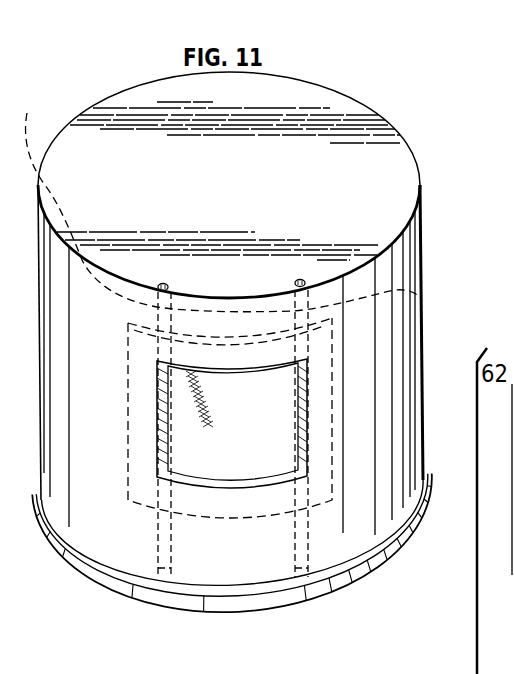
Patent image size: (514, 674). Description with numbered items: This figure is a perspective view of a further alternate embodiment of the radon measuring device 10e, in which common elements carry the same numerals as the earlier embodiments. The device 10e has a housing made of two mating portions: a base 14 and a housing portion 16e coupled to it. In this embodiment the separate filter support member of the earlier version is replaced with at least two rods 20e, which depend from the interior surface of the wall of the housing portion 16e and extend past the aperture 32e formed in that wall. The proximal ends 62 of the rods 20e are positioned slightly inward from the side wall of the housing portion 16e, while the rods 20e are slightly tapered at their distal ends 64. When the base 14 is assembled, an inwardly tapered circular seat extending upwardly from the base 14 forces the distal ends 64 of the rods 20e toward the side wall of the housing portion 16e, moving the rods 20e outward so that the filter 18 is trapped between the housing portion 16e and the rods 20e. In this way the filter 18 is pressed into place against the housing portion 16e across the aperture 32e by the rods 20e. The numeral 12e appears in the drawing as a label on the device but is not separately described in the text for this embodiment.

The radon measuring device 10e is at (347, 77).
The lid 12e is at (418, 141).
The base 14 is at (284, 606).
The housing portion 16e is at (421, 277).
The filter 18 is at (254, 446).
The rods 20e is at (437, 301).
The aperture 32e is at (226, 369).
The proximal ends 62 is at (163, 283).
The distal ends 64 is at (158, 568).